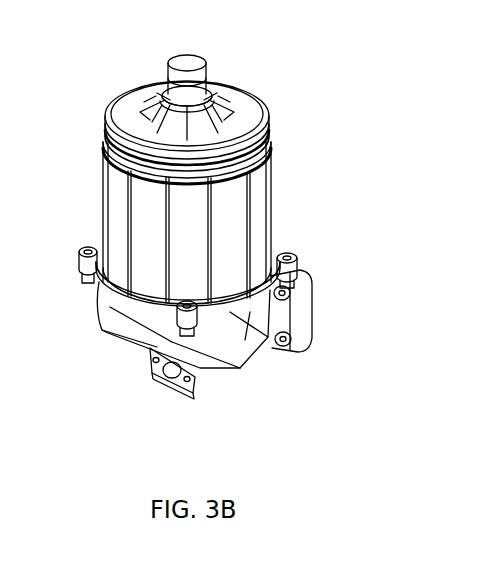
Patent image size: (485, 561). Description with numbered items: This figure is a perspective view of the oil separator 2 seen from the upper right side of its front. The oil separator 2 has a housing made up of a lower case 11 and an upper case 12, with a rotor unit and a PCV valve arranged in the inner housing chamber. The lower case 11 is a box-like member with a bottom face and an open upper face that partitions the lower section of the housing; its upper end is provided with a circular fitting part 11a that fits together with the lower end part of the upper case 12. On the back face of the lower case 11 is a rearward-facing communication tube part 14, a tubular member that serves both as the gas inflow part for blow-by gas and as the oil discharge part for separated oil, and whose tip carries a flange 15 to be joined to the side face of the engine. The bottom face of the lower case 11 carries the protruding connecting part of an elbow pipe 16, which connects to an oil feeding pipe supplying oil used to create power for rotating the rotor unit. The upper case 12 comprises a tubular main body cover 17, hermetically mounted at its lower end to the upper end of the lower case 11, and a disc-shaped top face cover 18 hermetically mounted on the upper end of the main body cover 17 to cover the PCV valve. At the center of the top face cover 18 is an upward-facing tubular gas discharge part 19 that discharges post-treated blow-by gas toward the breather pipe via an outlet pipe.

The oil separator 2 is at (108, 72).
The lower case 11 is at (223, 342).
The circular fitting part 11a is at (119, 307).
The upper case 12 is at (335, 92).
The communication tube part 14 is at (272, 325).
The flange 15 is at (300, 322).
The elbow pipe 16 is at (173, 384).
The main body cover 17 is at (253, 208).
The top face cover 18 is at (242, 127).
The gas discharge part 19 is at (222, 68).